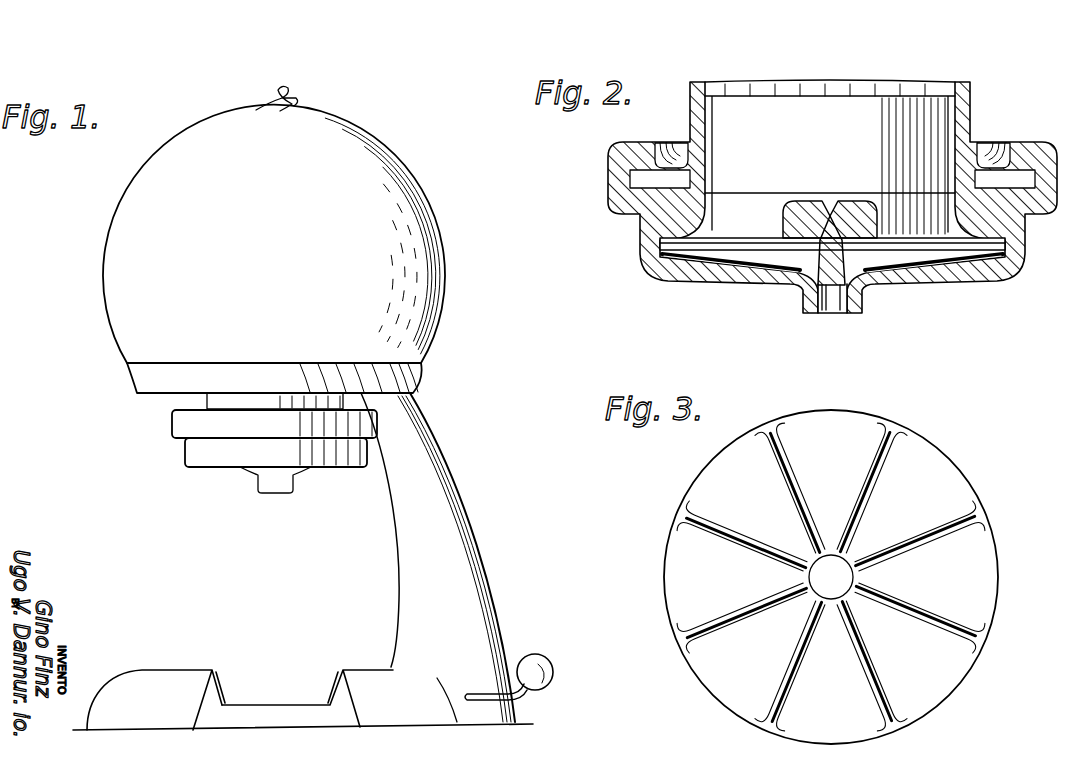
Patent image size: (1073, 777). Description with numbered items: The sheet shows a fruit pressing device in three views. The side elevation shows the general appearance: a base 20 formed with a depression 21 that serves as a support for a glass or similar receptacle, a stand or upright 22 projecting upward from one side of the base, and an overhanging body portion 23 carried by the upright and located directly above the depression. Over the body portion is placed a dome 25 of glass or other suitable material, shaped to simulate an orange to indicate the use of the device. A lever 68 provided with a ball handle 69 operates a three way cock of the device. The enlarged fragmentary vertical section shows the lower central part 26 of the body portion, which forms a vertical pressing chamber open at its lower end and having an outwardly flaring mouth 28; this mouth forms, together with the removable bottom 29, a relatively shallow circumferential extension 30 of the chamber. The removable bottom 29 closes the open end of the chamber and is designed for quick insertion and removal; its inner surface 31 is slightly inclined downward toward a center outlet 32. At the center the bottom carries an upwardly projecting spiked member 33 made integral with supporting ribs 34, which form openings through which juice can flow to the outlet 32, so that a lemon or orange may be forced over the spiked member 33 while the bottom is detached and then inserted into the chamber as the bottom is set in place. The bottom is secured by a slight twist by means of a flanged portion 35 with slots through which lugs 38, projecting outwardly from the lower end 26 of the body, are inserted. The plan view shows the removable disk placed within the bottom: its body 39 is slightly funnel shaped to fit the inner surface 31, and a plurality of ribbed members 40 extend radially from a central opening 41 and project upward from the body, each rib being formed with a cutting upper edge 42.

In FIG. 1, the base 20 is at (147, 675).
In FIG. 1, the depression 21 is at (300, 687).
In FIG. 1, the stand or upright 22 is at (438, 495).
In FIG. 1, the overhanging body portion 23 is at (183, 403).
In FIG. 1, the dome 25 is at (112, 277).
In FIG. 1, the lower central part of the body portion 26 is at (130, 368).
In FIG. 2, the lower central part of the body portion 26 is at (962, 100).
In FIG. 2, the outwardly flaring mouth 28 is at (963, 227).
In FIG. 1, the removable bottom 29 is at (367, 453).
In FIG. 2, the circumferential extension 30 is at (1000, 243).
In FIG. 2, the inner surface 31 is at (750, 280).
In FIG. 1, the center outlet 32 is at (297, 482).
In FIG. 2, the center outlet 32 is at (838, 310).
In FIG. 2, the spiked member 33 is at (880, 233).
In FIG. 2, the supporting ribs 34 is at (822, 308).
In FIG. 2, the flanged portion 35 is at (1045, 160).
In FIG. 2, the lugs 38 is at (1023, 178).
In FIG. 2, the body of the disk 39 is at (890, 263).
In FIG. 3, the body of the disk 39 is at (935, 470).
In FIG. 3, the ribbed members 40 is at (903, 550).
In FIG. 3, the central opening 41 is at (820, 578).
In FIG. 2, the cutting upper edge 42 is at (722, 243).
In FIG. 1, the lever 68 is at (530, 702).
In FIG. 1, the ball handle 69 is at (527, 654).